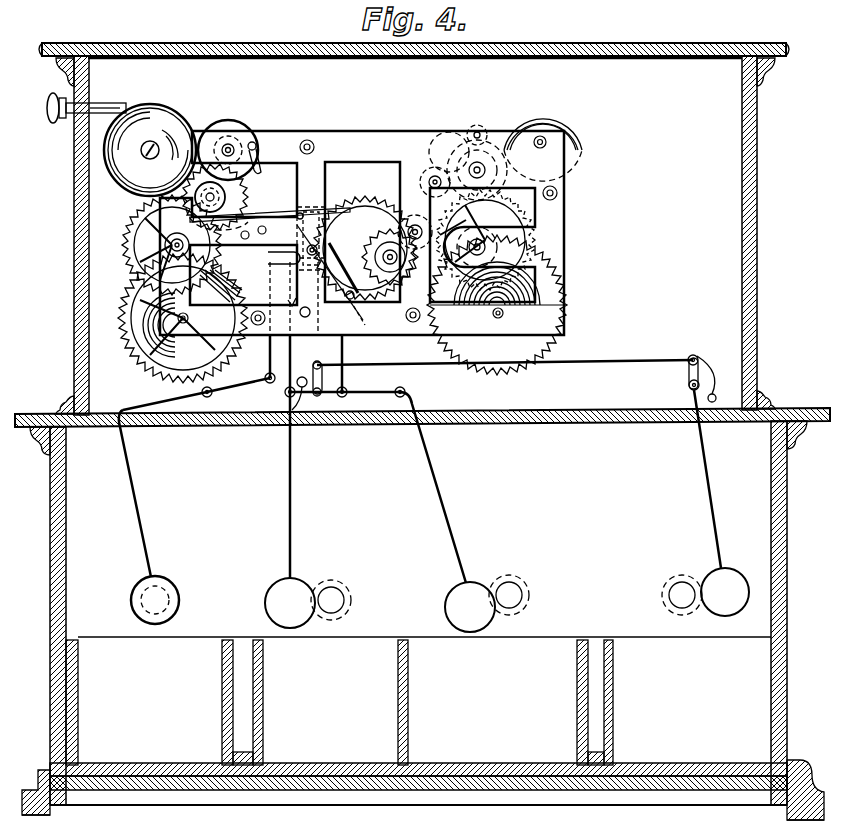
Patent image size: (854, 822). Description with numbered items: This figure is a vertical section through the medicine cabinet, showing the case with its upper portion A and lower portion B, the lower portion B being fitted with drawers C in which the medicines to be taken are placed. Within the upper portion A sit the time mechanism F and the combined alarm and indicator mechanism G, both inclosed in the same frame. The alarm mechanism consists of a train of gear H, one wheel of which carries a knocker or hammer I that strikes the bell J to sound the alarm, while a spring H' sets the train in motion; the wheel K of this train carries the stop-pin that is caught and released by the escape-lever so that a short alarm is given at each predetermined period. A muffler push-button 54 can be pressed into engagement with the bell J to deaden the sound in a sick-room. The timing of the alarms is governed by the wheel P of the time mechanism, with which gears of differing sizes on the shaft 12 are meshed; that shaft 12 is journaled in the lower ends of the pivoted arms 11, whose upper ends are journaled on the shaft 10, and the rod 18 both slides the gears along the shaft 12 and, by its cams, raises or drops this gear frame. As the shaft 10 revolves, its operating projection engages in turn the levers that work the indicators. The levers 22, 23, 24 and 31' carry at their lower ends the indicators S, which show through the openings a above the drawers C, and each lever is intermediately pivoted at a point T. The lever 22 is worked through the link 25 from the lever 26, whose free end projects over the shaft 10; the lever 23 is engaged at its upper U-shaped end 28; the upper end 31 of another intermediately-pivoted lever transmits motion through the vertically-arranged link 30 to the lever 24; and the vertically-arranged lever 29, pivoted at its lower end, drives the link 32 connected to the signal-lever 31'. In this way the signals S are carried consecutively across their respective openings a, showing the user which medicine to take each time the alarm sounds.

The upper portion A is at (422, 431).
The lower portion B is at (424, 580).
The drawers C is at (376, 702).
The muffler push-button 54 is at (56, 122).
The bell J is at (183, 128).
The combined alarm and indicator mechanism G is at (278, 138).
The wheel E is at (457, 130).
The time mechanism F is at (497, 282).
The knocker or hammer I is at (258, 166).
The wheel of the alarm train K is at (250, 204).
The train of gear H is at (160, 245).
The spring H' is at (173, 318).
The lever 26 is at (297, 214).
The upper U-shaped end 28 is at (296, 222).
The shaft 10 is at (329, 243).
The pivoted arms 11 is at (365, 248).
The wheel of the time mechanism P is at (380, 240).
The shaft 12 is at (343, 279).
The rod 18 is at (290, 296).
The upper end of intermediately-pivoted lever 31 is at (280, 256).
The link 25 is at (270, 345).
The vertically-arranged lever 29 is at (300, 336).
The vertically-arranged link 30 is at (343, 360).
The pivot points T is at (208, 396).
The link 32 is at (597, 355).
The signal-lever 31' is at (693, 479).
The lever 22 is at (147, 541).
The lever 23 is at (292, 548).
The lever 24 is at (459, 543).
The indicators S is at (440, 600).
The openings a is at (334, 600).